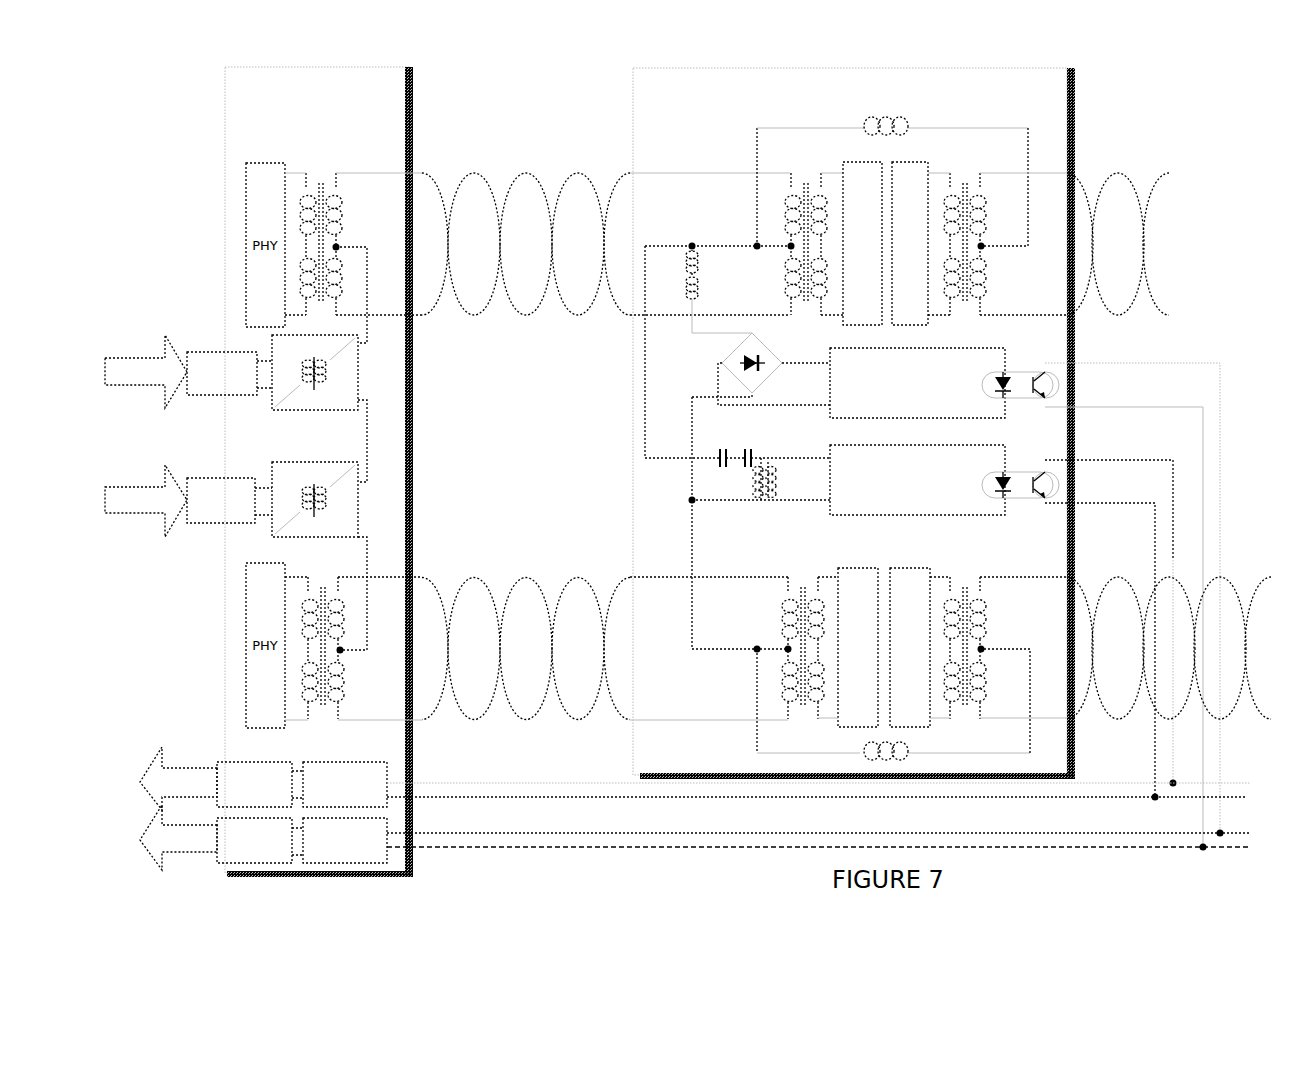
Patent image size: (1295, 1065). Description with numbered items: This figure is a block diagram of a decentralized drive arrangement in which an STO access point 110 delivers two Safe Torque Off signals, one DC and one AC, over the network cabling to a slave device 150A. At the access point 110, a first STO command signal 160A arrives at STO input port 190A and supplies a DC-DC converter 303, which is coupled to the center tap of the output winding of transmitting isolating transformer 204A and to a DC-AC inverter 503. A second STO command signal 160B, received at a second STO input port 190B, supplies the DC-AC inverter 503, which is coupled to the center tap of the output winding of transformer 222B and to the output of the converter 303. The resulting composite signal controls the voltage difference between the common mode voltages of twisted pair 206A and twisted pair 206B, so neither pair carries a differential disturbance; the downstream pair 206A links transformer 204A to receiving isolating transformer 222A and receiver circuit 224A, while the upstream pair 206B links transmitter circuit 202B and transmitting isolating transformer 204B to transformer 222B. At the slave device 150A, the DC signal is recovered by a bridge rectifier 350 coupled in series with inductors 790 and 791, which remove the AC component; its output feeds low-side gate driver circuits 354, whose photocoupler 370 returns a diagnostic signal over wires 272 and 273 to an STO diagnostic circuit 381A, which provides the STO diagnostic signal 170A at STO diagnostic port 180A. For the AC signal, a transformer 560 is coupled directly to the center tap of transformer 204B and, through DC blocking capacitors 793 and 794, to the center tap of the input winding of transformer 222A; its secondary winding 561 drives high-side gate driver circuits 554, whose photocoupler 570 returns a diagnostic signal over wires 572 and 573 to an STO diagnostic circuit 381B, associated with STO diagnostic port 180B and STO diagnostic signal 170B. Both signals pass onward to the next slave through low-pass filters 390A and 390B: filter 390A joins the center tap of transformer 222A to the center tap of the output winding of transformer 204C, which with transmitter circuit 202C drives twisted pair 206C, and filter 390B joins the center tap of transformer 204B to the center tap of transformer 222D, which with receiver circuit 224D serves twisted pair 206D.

The STO access point 110 is at (380, 84).
The slave device 150A is at (904, 83).
The transmitting isolating transformer 204A is at (319, 178).
The twisted pair of conductors 206A is at (522, 162).
The filter 390A is at (859, 128).
The receiving isolating transformer 222A is at (804, 178).
The transformer 204C is at (960, 172).
The twisted pair 206C is at (1140, 172).
The receiver circuit 224A is at (846, 265).
The PHY transmitter 202C is at (894, 265).
The inductor 790 is at (700, 265).
The inductor 791 is at (700, 293).
The bridge rectifier 350 is at (772, 344).
The photocoupler 370 is at (1021, 368).
The low-side gate driver circuits 354 is at (907, 409).
The DC-DC converter 303 is at (359, 377).
The STO command signal 160A is at (125, 382).
The STO input port 190A is at (211, 391).
The DC blocking capacitor 793 is at (720, 448).
The DC blocking capacitor 794 is at (745, 448).
The transformer 560 is at (758, 486).
The secondary winding 561 is at (778, 480).
The photocoupler 570 is at (1015, 473).
The high-side gate driver circuits 554 is at (906, 506).
The STO command signal 160B is at (125, 511).
The STO input port 190B is at (207, 522).
The DC-AC inverter 503 is at (359, 505).
The receiving isolating transformer 222B is at (317, 583).
The twisted pair of conductors 206B is at (532, 559).
The transmitter circuit 202B is at (842, 670).
The PHY receiver 224D is at (894, 670).
The transmitting isolating transformer 204B is at (801, 718).
The transformer 222D is at (969, 718).
The filter 390B is at (861, 753).
The twisted pair 206D is at (1113, 730).
The wire 572 is at (534, 783).
The wire 573 is at (541, 798).
The wire 272 is at (638, 834).
The wire 273 is at (644, 847).
The STO diagnostic 170B is at (168, 795).
The STO diagnostic port 180B is at (245, 802).
The STO diagnostic circuit 381B is at (335, 802).
The STO diagnostic signal 170A is at (168, 852).
The STO diagnostic port 180A is at (245, 858).
The STO diagnostic circuit 381A is at (335, 858).